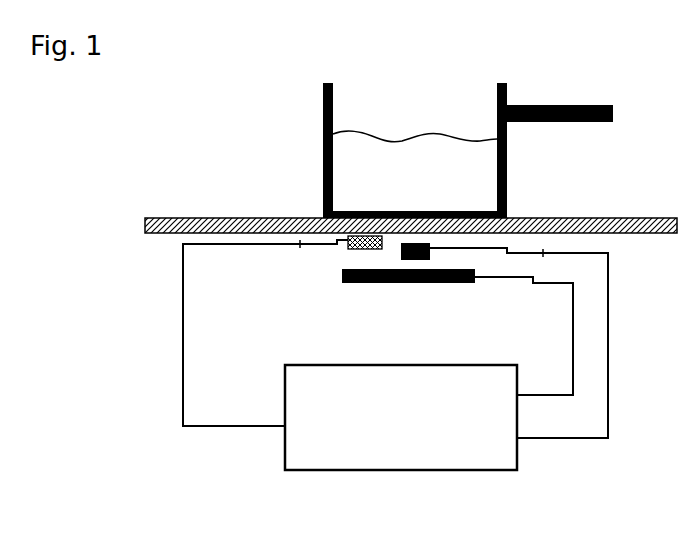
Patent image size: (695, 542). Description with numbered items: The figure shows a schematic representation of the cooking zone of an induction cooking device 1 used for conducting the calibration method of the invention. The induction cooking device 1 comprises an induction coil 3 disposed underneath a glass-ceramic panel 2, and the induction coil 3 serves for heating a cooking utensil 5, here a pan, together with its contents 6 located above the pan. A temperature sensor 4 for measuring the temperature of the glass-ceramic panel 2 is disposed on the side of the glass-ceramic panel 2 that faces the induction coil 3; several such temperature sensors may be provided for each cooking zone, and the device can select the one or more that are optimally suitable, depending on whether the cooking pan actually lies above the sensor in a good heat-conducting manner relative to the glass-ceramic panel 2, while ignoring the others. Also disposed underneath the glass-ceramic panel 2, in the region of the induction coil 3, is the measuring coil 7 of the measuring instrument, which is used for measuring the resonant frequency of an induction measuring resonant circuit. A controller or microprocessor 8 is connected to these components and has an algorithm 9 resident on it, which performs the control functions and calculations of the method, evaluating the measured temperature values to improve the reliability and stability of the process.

The induction cooking device 1 is at (262, 203).
The glass-ceramic panel 2 is at (165, 218).
The induction coil 3 is at (385, 283).
The temperature sensor 4 is at (346, 249).
The cooking utensil 5 is at (323, 111).
The contents 6 is at (482, 178).
The measuring coil 7 is at (420, 260).
The controller or microprocessor 8 is at (285, 470).
The algorithm 9 is at (394, 413).